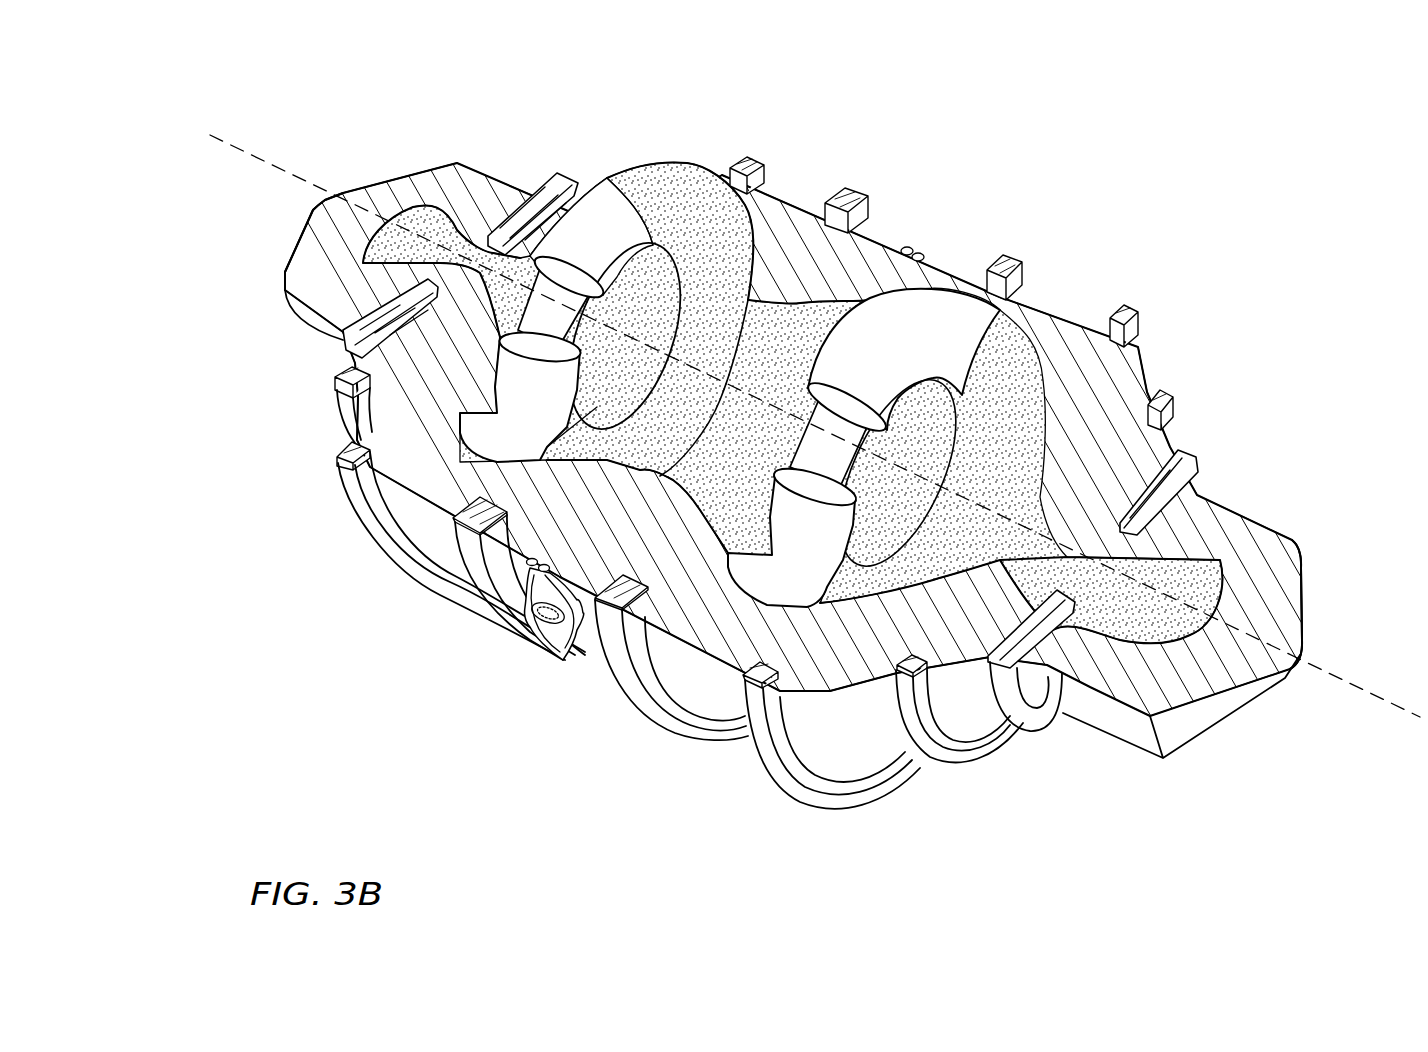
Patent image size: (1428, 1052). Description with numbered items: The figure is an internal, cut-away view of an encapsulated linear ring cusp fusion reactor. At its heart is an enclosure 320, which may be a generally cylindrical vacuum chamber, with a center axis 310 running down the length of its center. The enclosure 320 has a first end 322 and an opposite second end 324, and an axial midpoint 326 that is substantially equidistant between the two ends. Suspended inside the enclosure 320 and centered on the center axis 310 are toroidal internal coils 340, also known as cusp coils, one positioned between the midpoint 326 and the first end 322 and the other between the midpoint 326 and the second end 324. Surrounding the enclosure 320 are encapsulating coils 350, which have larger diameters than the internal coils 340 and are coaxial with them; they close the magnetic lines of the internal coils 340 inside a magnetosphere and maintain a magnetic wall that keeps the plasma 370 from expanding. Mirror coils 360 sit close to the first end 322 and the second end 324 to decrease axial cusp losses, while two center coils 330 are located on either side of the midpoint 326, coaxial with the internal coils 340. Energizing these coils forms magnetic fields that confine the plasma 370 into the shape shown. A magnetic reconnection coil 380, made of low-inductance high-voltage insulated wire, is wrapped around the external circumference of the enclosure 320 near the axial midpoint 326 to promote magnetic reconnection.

The center axis 310 is at (278, 161).
The enclosure 320 is at (1035, 735).
The first end 322 is at (307, 236).
The second end 324 is at (1302, 590).
The axial midpoint 326 is at (927, 221).
The center coil 330 is at (467, 558).
The internal coil 340 is at (1097, 263).
The encapsulating coil 350 is at (343, 472).
The mirror coil 360 is at (1047, 793).
The plasma 370 is at (770, 293).
The magnetic reconnection coil 380 is at (563, 663).